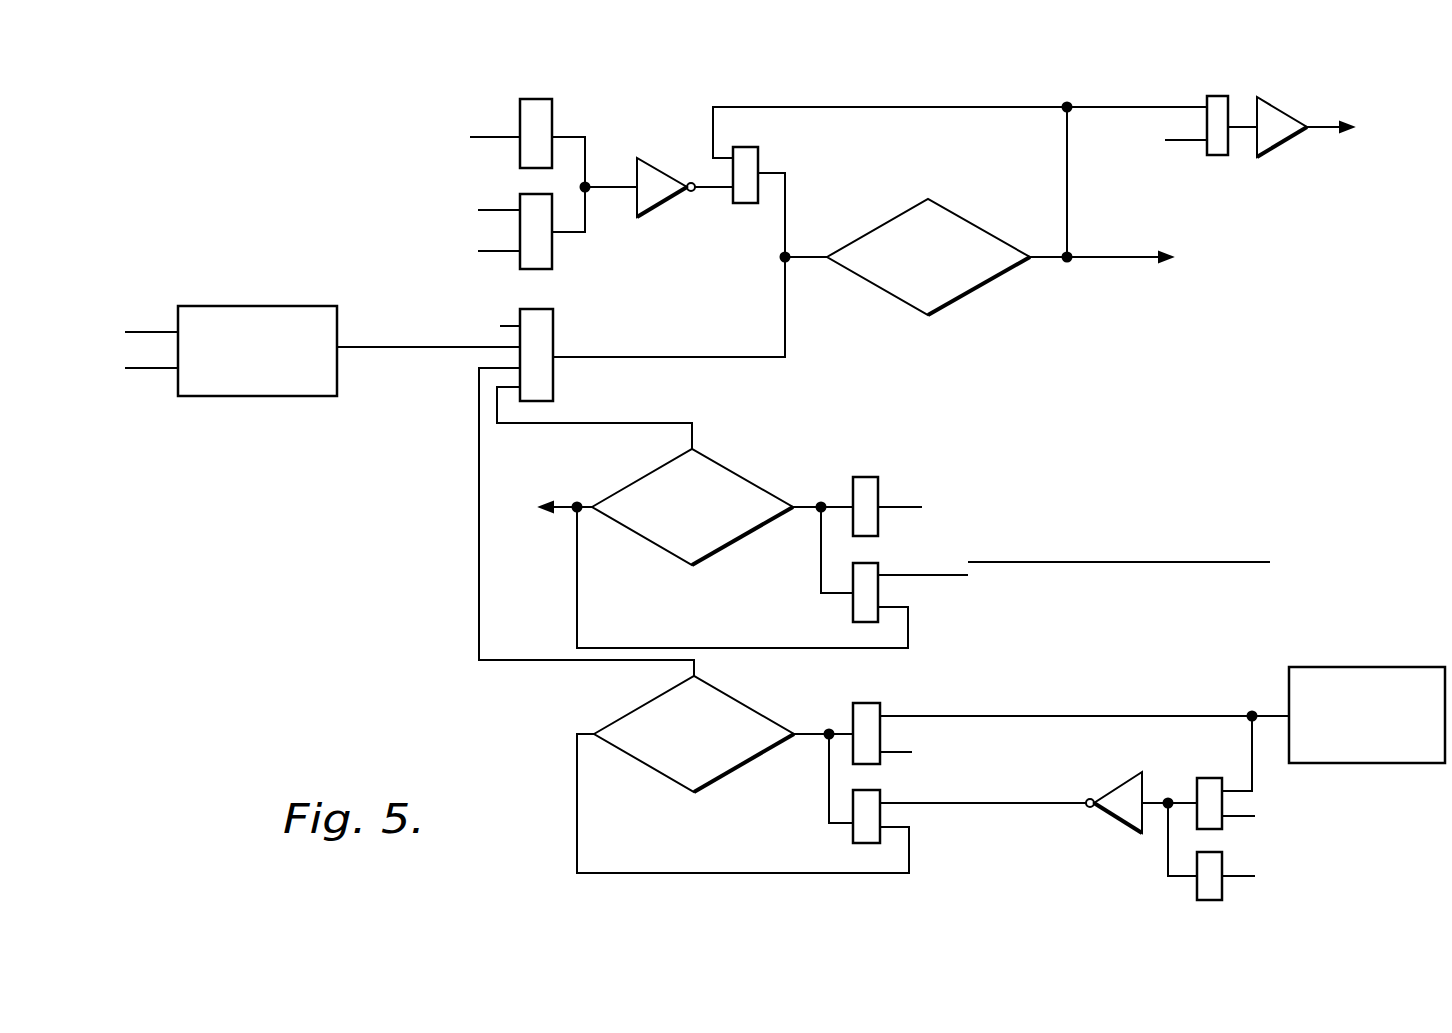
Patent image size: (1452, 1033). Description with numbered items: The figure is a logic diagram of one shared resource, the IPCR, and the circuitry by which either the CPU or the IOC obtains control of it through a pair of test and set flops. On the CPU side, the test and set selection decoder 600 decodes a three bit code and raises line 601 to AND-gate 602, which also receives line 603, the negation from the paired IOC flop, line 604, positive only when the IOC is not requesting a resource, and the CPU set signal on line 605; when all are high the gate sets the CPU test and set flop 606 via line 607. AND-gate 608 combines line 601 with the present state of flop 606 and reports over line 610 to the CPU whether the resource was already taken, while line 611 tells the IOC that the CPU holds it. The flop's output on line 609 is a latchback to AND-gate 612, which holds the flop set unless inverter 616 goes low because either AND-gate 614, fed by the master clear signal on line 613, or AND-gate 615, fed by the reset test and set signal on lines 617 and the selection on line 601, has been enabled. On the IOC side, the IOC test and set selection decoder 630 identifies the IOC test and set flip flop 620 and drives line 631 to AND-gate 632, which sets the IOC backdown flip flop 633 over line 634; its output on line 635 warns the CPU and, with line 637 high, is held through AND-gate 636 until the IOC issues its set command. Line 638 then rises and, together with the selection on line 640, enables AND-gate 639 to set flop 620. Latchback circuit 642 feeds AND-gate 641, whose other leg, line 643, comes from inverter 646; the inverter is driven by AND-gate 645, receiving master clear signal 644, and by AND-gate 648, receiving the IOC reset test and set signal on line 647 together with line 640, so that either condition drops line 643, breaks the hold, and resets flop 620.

The test and set selection decoder 600 is at (257, 396).
The line 601 is at (1168, 163).
The AND-gate 602 is at (553, 325).
The line 603 is at (479, 400).
The line 604 is at (527, 423).
The line 605 is at (510, 325).
The CPU test and set flop 606 is at (975, 290).
The line 607 is at (808, 257).
The AND-gate 608 is at (1220, 96).
The line 609 is at (960, 182).
The line 610 is at (1325, 122).
The line 611 is at (1105, 257).
The AND-gate 612 is at (748, 147).
The line 613 is at (517, 135).
The AND-gate 614 is at (538, 99).
The AND-gate 615 is at (553, 253).
The inverter 616 is at (648, 158).
The lines 617 is at (500, 252).
The IOC test and set flip flop 620 is at (735, 700).
The IOC test and set selection decoder 630 is at (1357, 667).
The line 631 is at (893, 504).
The AND-gate 632 is at (872, 478).
The IOC backdown flip flop 633 is at (672, 457).
The line 634 is at (805, 503).
The line 635 is at (808, 645).
The AND-gate 636 is at (868, 563).
The line 637 is at (915, 573).
The line 638 is at (905, 752).
The AND-gate 639 is at (870, 703).
The line 640 is at (1160, 716).
The AND-gate 641 is at (882, 790).
The latchback circuit 642 is at (740, 872).
The line 643 is at (975, 803).
The master clear signal 644 is at (1238, 882).
The AND-gate 645 is at (1197, 888).
The inverter 646 is at (1105, 808).
The line 647 is at (1242, 818).
The AND-gate 648 is at (1210, 778).